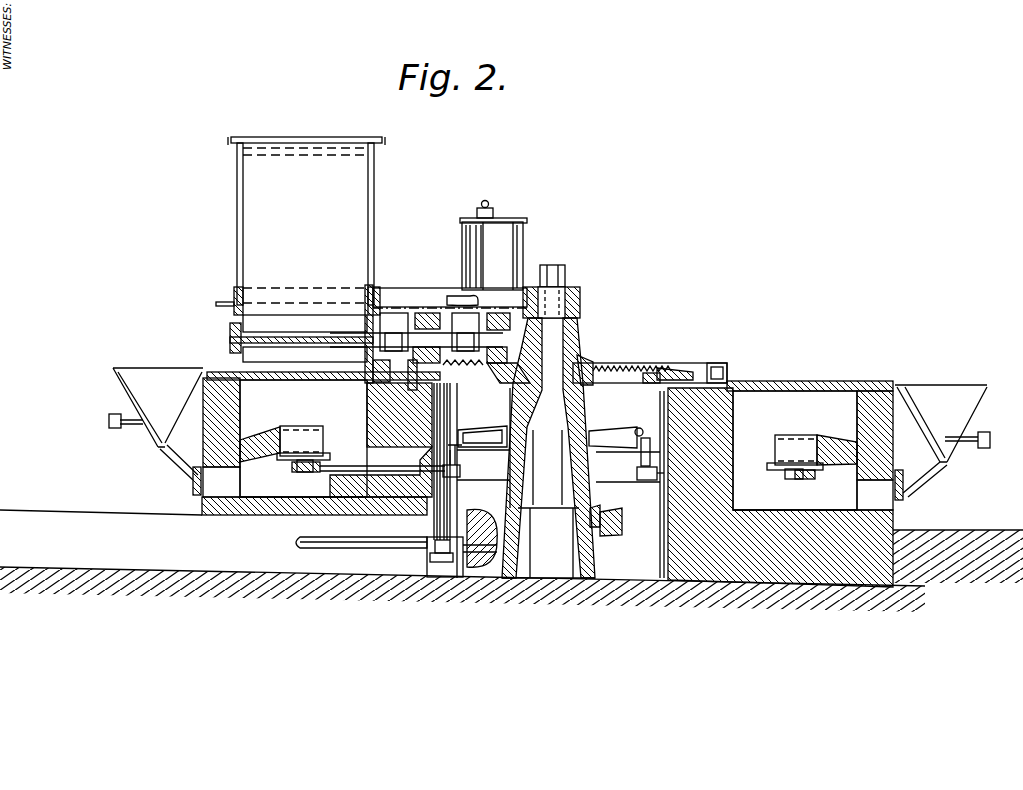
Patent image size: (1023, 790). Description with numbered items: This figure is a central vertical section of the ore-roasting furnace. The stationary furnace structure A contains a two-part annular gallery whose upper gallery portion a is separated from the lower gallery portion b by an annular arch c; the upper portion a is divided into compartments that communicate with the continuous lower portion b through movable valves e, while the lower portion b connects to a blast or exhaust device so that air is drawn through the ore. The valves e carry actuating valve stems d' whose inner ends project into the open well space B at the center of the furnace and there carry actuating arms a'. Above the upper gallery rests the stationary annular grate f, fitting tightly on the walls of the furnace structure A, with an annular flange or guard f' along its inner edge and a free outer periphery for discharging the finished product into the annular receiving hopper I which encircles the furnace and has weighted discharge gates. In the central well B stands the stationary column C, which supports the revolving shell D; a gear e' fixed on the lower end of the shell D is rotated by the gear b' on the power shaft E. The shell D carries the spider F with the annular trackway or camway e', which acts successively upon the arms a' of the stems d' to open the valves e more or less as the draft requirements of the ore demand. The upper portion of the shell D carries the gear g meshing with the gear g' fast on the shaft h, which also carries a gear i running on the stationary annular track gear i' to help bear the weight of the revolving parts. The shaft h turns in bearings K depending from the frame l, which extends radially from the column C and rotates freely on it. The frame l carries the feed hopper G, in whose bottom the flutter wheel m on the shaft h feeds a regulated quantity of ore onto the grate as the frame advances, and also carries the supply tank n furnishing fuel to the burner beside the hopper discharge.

The furnace structure A is at (202, 510).
The open well space B is at (630, 484).
The stationary column C is at (548, 421).
The revolving shell D is at (582, 362).
The power shaft E is at (361, 553).
The spider F is at (490, 428).
The feed hopper G is at (300, 226).
The annular receiving hopper I is at (549, 434).
The bearings K is at (416, 337).
The upper gallery portion a is at (530, 444).
The actuating arms a' is at (553, 465).
The lower gallery portion b is at (548, 496).
The gear b' is at (462, 542).
The annular arch c is at (548, 437).
The bevel piece c' is at (617, 520).
The valve stems d' is at (565, 481).
The movable valves e is at (550, 452).
The gear / annular trackway or camway e' is at (644, 441).
The stationary annular grate f is at (550, 395).
The annular flange or guard f' is at (729, 366).
The gear g is at (613, 424).
The gear g' is at (506, 322).
The shaft h is at (508, 358).
The gear i is at (444, 300).
The stationary annular track gear i' is at (679, 357).
The frame l is at (409, 303).
The flutter wheel m is at (301, 338).
The supply tank n is at (493, 246).